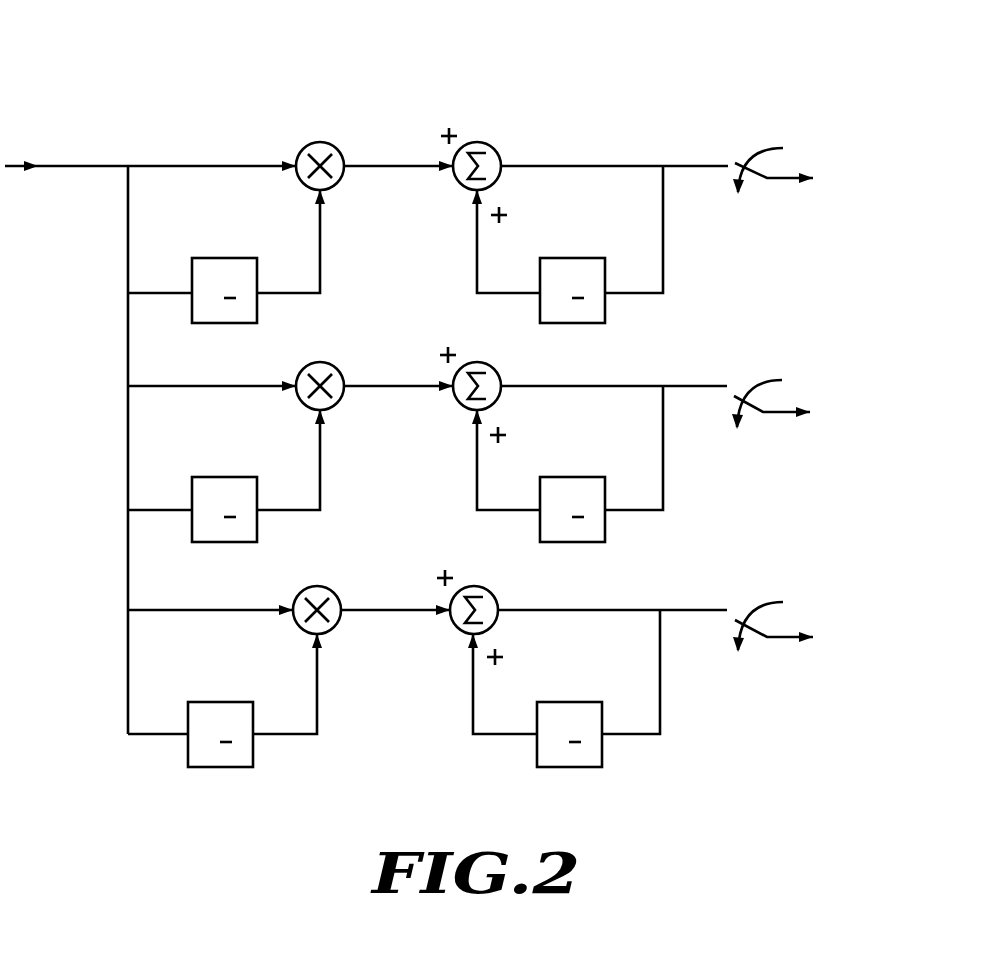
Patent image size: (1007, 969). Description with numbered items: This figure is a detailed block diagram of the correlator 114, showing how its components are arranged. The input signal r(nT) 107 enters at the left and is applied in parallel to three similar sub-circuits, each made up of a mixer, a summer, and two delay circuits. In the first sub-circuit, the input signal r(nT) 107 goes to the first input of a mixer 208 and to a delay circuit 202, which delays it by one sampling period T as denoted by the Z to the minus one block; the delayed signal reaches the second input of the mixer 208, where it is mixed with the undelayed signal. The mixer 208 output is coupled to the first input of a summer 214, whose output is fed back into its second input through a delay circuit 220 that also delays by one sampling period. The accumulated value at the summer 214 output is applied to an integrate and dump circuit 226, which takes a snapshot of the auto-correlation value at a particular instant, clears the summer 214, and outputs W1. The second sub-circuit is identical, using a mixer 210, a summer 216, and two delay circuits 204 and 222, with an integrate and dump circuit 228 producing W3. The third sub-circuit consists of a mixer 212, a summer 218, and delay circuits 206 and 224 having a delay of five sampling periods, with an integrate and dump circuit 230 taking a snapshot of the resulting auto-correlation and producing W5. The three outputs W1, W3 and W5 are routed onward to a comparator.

The correlator 114 is at (123, 43).
The input signal r(nT) 107 is at (150, 166).
The delay circuit 202 is at (222, 255).
The delay circuit 204 is at (222, 475).
The delay circuit 206 is at (222, 699).
The mixer 208 is at (331, 143).
The mixer 210 is at (330, 356).
The mixer 212 is at (327, 582).
The summer 214 is at (465, 198).
The summer 216 is at (457, 415).
The summer 218 is at (455, 638).
The delay circuit 220 is at (598, 253).
The delay circuit 222 is at (598, 470).
The delay circuit 224 is at (597, 697).
The integrate and dump circuit 226 is at (756, 170).
The integrate and dump circuit 228 is at (756, 405).
The integrate and dump circuit 230 is at (756, 630).